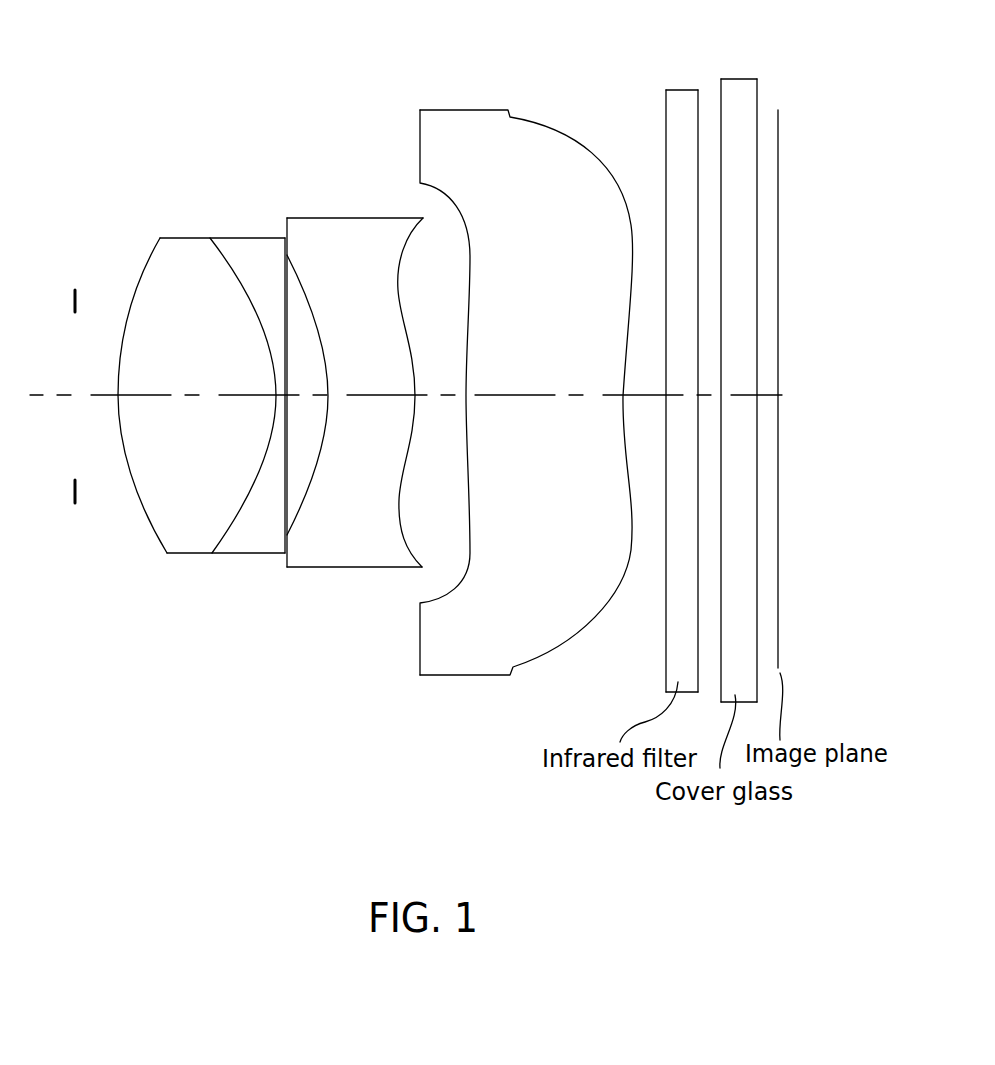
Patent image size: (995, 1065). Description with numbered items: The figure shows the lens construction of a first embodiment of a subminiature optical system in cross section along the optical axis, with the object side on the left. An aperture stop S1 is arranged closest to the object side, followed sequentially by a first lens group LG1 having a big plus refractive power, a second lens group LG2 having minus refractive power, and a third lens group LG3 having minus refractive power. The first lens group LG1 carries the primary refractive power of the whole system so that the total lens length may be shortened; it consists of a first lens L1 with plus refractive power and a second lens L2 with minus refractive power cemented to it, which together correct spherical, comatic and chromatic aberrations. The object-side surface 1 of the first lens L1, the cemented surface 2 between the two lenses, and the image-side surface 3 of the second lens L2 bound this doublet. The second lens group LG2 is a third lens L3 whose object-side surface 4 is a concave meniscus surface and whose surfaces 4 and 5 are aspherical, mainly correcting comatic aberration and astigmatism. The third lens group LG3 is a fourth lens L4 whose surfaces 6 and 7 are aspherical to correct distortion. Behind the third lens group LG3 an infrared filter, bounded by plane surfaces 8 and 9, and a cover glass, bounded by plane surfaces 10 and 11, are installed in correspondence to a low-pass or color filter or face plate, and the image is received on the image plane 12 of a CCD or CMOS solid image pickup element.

The aperture stop S1 is at (75, 262).
The first surface 1 is at (157, 218).
The second surface 2 is at (207, 218).
The third surface 3 is at (268, 215).
The fourth surface 4 is at (283, 196).
The fifth surface 5 is at (405, 220).
The sixth surface 6 is at (417, 89).
The seventh surface 7 is at (505, 89).
The infrared filter object-side surface 8 is at (663, 64).
The infrared filter image-side surface 9 is at (695, 64).
The cover glass object-side surface 10 is at (718, 54).
The cover glass image-side surface 11 is at (752, 54).
The image plane 12 is at (777, 89).
The first lens L1 is at (201, 389).
The second lens L2 is at (249, 389).
The third lens L3 is at (349, 391).
The fourth lens L4 is at (520, 385).
The first lens group LG1 is at (201, 421).
The second lens group LG2 is at (349, 419).
The third lens group LG3 is at (520, 413).